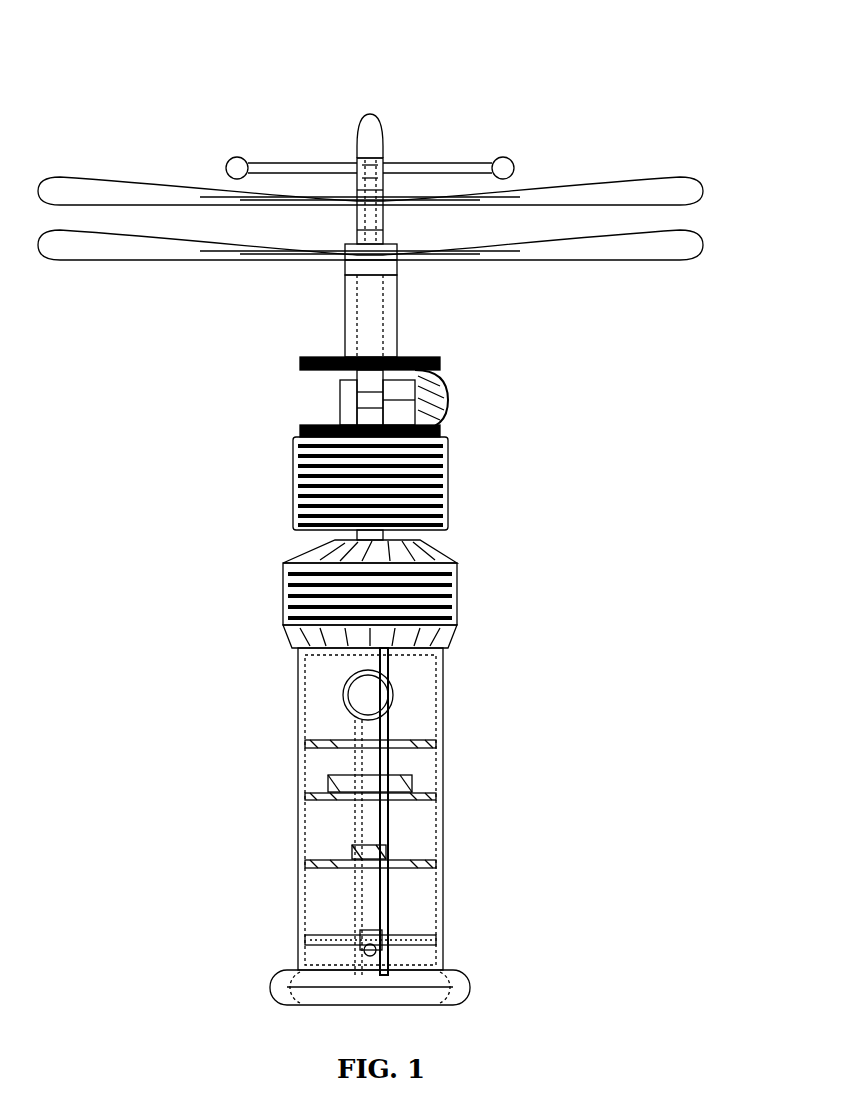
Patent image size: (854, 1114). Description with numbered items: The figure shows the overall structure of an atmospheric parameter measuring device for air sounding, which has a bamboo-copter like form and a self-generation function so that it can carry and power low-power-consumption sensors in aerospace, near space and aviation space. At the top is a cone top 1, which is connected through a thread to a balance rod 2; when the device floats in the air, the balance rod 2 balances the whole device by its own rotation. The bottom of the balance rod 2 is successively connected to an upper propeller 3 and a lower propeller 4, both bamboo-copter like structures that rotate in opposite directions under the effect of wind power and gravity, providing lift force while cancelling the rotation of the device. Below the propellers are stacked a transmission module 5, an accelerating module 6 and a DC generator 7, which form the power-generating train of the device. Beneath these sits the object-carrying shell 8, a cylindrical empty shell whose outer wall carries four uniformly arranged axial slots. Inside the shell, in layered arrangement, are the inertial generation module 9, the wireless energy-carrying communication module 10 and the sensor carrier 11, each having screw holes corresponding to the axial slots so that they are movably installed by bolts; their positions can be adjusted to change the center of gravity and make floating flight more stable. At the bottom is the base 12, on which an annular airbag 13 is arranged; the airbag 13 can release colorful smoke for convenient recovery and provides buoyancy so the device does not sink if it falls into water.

The cone top 1 is at (365, 138).
The balance rod 2 is at (365, 180).
The upper propeller 3 is at (107, 190).
The lower propeller 4 is at (597, 243).
The transmission module 5 is at (445, 395).
The accelerating module 6 is at (445, 475).
The DC generator 7 is at (455, 600).
The object-carrying shell 8 is at (413, 677).
The inertial generation module 9 is at (368, 682).
The wireless energy-carrying communication module 10 is at (393, 780).
The sensor carrier 11 is at (363, 850).
The base 12 is at (407, 950).
The airbag 13 is at (445, 982).